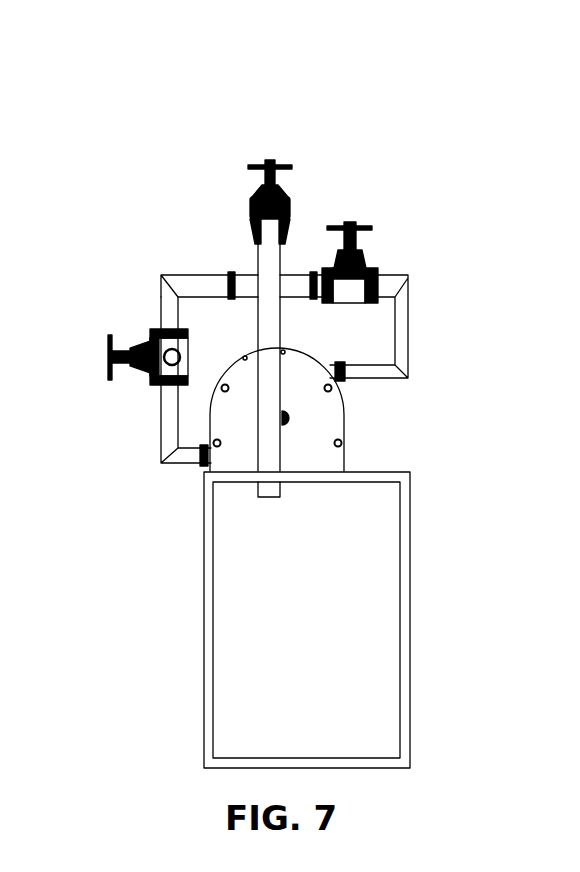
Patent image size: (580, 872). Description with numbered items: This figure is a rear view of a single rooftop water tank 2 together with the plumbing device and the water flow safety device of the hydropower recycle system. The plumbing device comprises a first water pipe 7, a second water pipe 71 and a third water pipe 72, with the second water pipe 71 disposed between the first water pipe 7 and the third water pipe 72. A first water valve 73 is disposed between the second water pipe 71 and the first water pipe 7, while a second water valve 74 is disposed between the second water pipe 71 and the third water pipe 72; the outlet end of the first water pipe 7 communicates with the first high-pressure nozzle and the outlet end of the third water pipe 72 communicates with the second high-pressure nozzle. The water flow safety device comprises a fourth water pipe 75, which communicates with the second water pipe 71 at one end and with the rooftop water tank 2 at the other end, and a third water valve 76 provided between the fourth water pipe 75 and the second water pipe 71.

The rooftop water tank 2 is at (205, 560).
The first water pipe 7 is at (162, 425).
The second water pipe 71 is at (170, 280).
The third water pipe 72 is at (408, 340).
The first water valve 73 is at (109, 333).
The second water valve 74 is at (352, 225).
The fourth water pipe 75 is at (280, 327).
The third water valve 76 is at (275, 160).